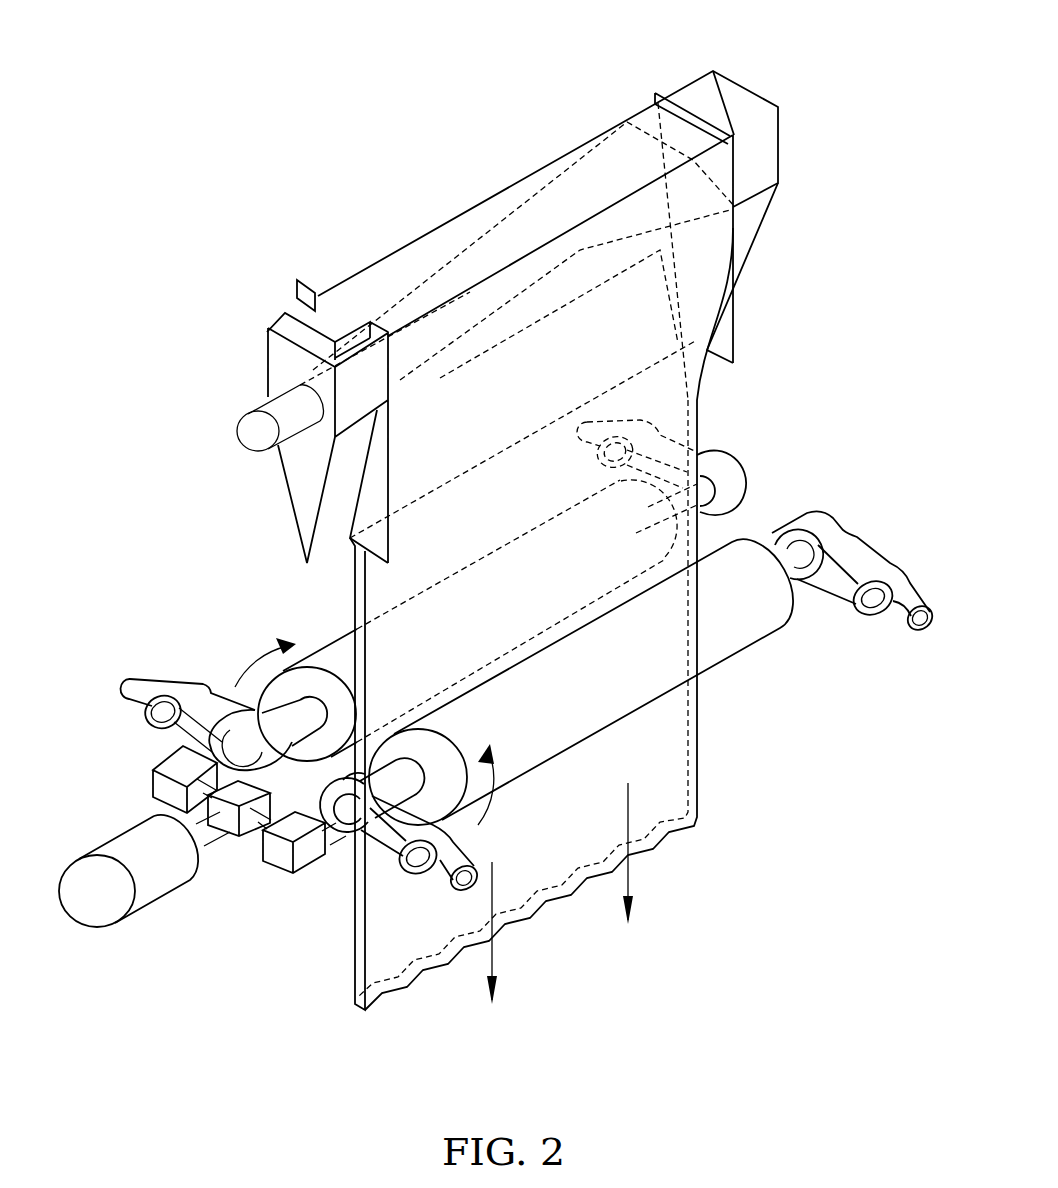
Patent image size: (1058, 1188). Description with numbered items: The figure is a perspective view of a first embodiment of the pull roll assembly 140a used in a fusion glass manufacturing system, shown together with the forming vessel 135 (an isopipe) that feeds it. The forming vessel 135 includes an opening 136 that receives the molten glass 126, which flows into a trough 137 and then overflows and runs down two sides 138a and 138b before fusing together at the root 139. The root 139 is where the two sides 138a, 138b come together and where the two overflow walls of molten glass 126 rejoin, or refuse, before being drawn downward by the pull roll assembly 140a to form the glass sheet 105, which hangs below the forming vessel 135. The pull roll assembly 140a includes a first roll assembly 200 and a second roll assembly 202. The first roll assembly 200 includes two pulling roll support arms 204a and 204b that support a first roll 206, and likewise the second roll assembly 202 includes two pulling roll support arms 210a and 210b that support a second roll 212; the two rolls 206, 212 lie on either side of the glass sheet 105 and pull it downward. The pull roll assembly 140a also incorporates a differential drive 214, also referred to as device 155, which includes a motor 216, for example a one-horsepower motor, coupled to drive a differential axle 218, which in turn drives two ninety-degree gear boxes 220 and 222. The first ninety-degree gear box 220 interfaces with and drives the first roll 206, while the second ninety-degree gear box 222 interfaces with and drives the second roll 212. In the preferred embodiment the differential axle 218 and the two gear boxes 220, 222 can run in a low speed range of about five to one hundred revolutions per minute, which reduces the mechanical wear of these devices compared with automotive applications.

The forming vessel 135 is at (563, 294).
The opening 136 is at (314, 371).
The trough 137 is at (562, 251).
The side 138a is at (295, 486).
The side 138b is at (269, 500).
The root 139 is at (625, 286).
The molten glass 126 is at (734, 259).
The glass sheet 105 is at (493, 675).
The second roll 212 is at (466, 620).
The pulling roll support arm 210a is at (203, 724).
The pulling roll support arm 210b is at (754, 482).
The second roll assembly 202 is at (694, 453).
The first roll 206 is at (585, 682).
The pulling roll support arm 204a is at (387, 843).
The pulling roll support arm 204b is at (847, 597).
The first roll assembly 200 is at (854, 557).
The pull roll assembly 140a is at (850, 498).
The differential drive 214 is at (202, 869).
The device 155 is at (202, 869).
The motor 216 is at (144, 869).
The differential axle 218 is at (228, 847).
The 90° degree gear box 220 is at (279, 879).
The 90° degree gear box 222 is at (148, 779).